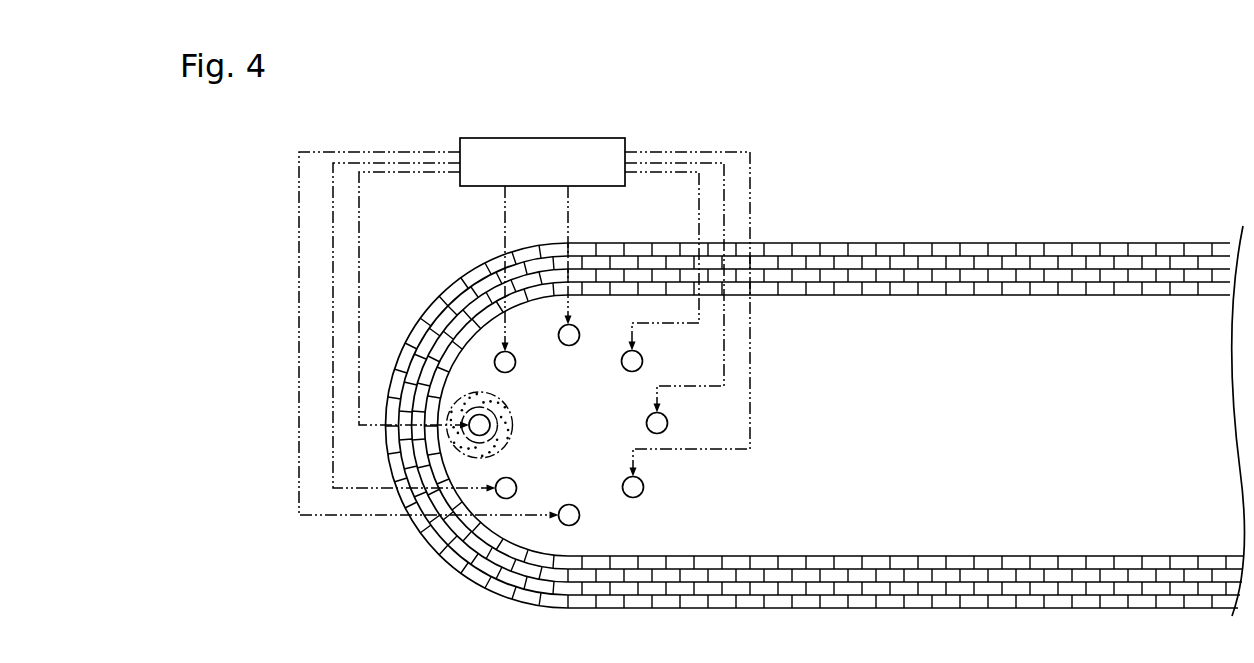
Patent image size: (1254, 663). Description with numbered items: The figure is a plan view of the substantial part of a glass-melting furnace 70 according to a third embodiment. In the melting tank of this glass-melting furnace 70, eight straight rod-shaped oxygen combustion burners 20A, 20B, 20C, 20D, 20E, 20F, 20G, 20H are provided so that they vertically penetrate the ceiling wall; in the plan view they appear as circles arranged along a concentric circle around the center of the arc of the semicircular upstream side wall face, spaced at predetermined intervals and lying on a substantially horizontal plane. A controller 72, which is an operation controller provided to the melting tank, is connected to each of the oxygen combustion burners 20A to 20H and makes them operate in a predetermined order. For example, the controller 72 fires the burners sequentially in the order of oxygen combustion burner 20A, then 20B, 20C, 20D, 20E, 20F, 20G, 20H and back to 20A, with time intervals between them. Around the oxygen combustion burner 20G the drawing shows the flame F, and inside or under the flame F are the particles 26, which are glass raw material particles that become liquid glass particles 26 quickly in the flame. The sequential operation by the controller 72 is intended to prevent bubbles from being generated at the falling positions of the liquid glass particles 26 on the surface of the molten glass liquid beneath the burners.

The glass-melting furnace 70 is at (1049, 190).
The controller 72 is at (540, 138).
The oxygen combustion burner 20A is at (576, 327).
The oxygen combustion burner 20B is at (640, 354).
The oxygen combustion burner 20C is at (666, 417).
The oxygen combustion burner 20D is at (643, 487).
The oxygen combustion burner 20E is at (579, 517).
The oxygen combustion burner 20F is at (516, 488).
The oxygen combustion burner 20G is at (490, 424).
The oxygen combustion burner 20H is at (515, 366).
The liquid glass particles 26 is at (505, 431).
The flame F is at (508, 406).